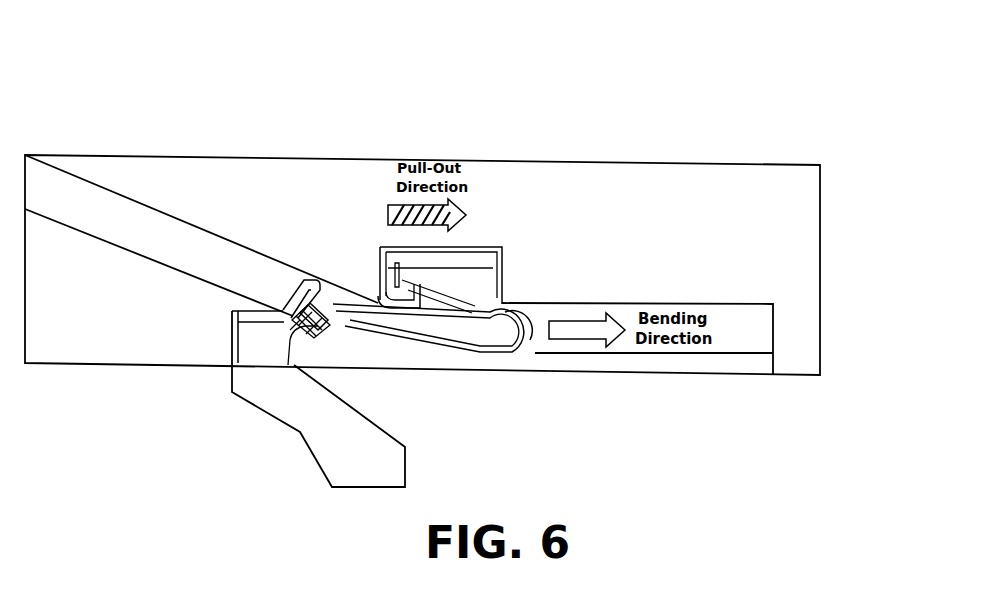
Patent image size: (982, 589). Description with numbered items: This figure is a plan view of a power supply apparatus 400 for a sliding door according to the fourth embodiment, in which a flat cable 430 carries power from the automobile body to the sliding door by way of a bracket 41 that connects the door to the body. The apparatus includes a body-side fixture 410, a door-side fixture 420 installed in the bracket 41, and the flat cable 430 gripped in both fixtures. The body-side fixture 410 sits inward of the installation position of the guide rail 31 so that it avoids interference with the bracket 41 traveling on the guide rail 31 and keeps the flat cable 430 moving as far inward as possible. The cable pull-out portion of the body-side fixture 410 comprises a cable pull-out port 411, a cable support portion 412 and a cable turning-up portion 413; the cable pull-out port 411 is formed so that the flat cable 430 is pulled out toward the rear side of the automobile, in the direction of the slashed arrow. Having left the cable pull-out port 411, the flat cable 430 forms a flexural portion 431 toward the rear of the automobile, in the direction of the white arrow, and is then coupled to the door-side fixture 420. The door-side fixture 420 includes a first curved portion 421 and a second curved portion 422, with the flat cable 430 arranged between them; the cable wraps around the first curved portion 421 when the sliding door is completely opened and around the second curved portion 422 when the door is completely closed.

The power supply apparatus 400 is at (510, 88).
The body-side fixture 410 is at (477, 233).
The cable pull-out port 411 is at (401, 292).
The cable support portion 412 is at (477, 282).
The cable turning-up portion 413 is at (378, 245).
The door-side fixture 420 is at (305, 263).
The first curved portion 421 is at (297, 283).
The second curved portion 422 is at (330, 320).
The flat cable 430 is at (483, 352).
The flexural portion 431 is at (533, 342).
The guide rail 31 is at (707, 348).
The bracket 41 is at (342, 472).